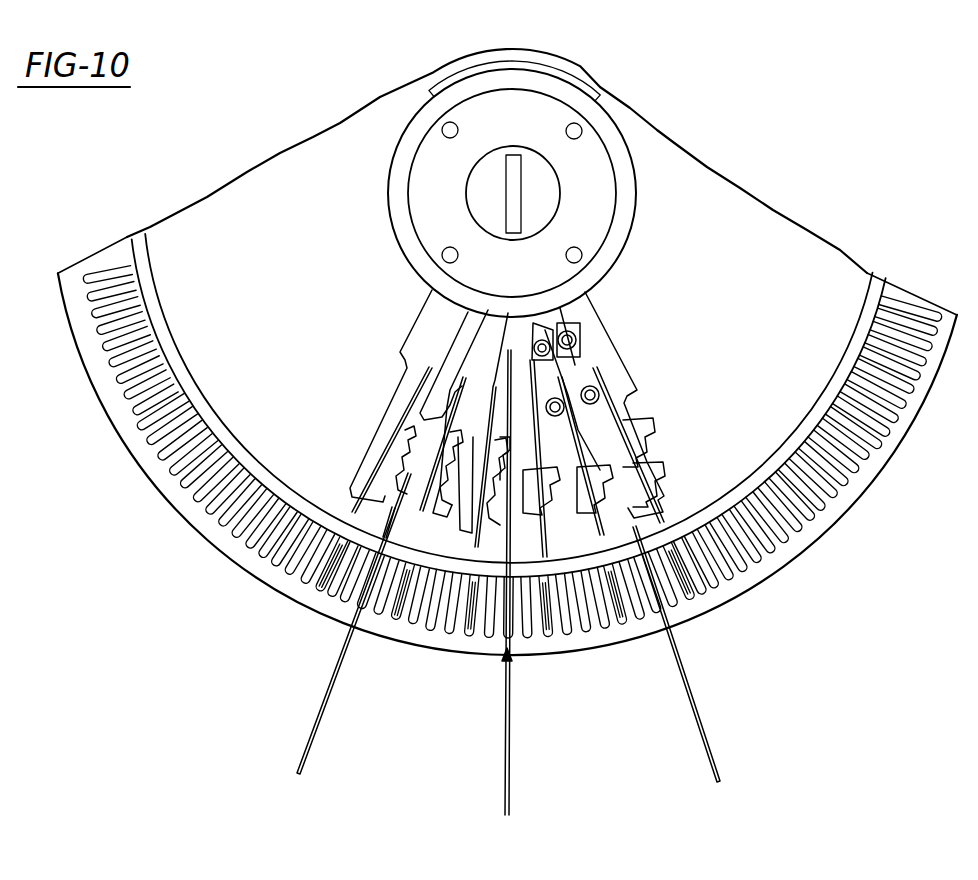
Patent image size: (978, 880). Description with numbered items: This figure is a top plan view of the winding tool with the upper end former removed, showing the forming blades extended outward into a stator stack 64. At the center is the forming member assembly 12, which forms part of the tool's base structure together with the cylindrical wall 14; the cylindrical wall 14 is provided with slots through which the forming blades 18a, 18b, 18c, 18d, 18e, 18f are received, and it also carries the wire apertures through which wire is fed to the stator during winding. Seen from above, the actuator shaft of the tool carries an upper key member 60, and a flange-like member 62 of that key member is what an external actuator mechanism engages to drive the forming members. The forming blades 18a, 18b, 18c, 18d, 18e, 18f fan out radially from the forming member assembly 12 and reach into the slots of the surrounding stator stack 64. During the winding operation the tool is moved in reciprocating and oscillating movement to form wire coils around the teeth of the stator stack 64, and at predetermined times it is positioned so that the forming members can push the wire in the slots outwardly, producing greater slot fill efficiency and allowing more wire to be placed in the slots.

The forming member assembly 12 is at (641, 210).
The cylindrical wall 14 is at (770, 452).
The upper key member 60 is at (487, 178).
The flange-like member 62 is at (508, 203).
The stator stack 64 is at (782, 572).
The forming blade 18a is at (323, 588).
The forming blade 18b is at (395, 618).
The forming blade 18c is at (468, 630).
The forming blade 18d is at (548, 633).
The forming blade 18e is at (621, 620).
The forming blade 18f is at (694, 595).